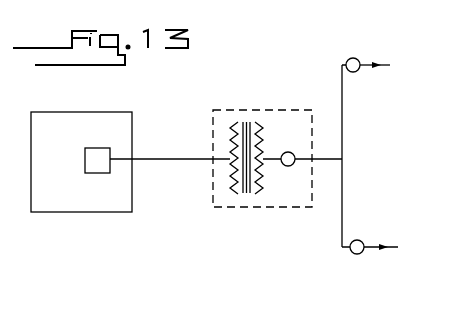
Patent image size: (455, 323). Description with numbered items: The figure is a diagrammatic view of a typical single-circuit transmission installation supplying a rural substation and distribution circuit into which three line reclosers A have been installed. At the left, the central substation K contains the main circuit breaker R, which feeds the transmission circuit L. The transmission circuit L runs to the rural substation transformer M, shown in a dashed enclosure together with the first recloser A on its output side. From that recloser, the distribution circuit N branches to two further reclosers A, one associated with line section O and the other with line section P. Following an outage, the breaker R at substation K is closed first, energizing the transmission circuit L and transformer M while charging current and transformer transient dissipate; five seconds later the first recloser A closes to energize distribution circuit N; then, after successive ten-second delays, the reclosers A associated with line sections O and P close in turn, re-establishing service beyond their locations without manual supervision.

The second distribution substation K is at (85, 123).
The circuit breaker R is at (100, 170).
The transmission circuit L is at (170, 161).
The substation transformer M is at (256, 131).
The inrush electric current control circuit recloser A is at (288, 166).
The distribution circuit N is at (343, 146).
The line section P is at (367, 62).
The line section O is at (370, 243).